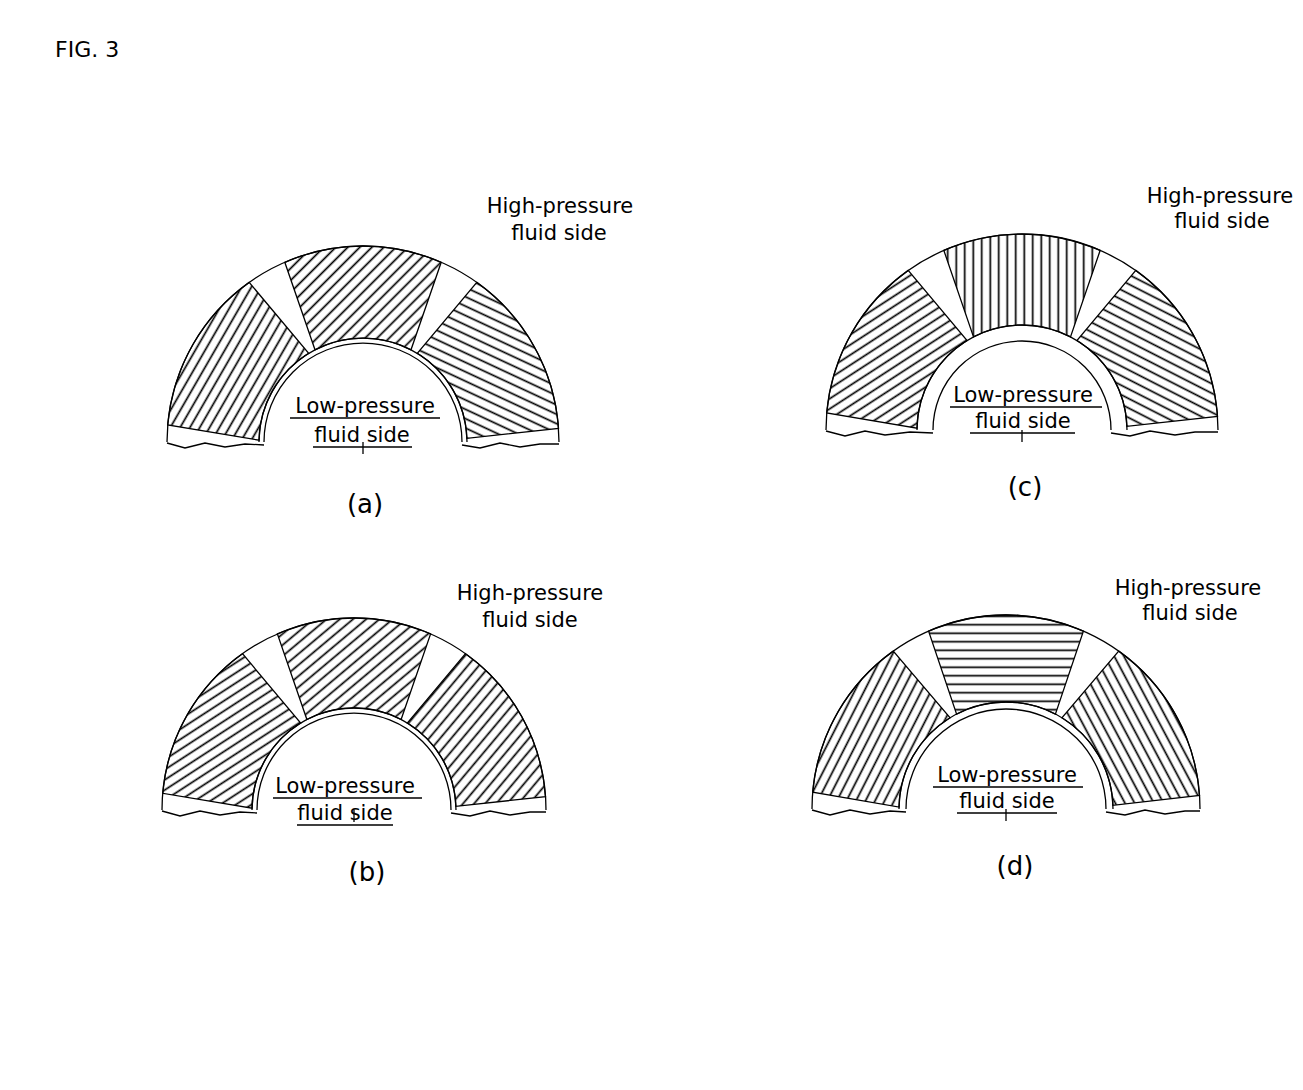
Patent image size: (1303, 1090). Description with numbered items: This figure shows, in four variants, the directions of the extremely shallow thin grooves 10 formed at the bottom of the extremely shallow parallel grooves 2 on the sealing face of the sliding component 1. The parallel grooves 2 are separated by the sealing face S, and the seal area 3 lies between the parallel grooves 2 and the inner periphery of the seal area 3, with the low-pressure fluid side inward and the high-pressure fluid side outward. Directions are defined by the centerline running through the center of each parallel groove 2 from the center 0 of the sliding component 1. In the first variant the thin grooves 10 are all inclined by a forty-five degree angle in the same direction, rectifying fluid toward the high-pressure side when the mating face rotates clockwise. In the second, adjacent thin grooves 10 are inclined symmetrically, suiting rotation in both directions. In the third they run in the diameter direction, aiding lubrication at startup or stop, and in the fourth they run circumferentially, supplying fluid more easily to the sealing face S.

The sliding component 1 is at (153, 396).
The extremely shallow parallel grooves 2 is at (358, 247).
The seal area 3 is at (360, 343).
The extremely shallow thin grooves 10 is at (437, 226).
The center 0 is at (363, 442).
The sealing face S is at (273, 285).